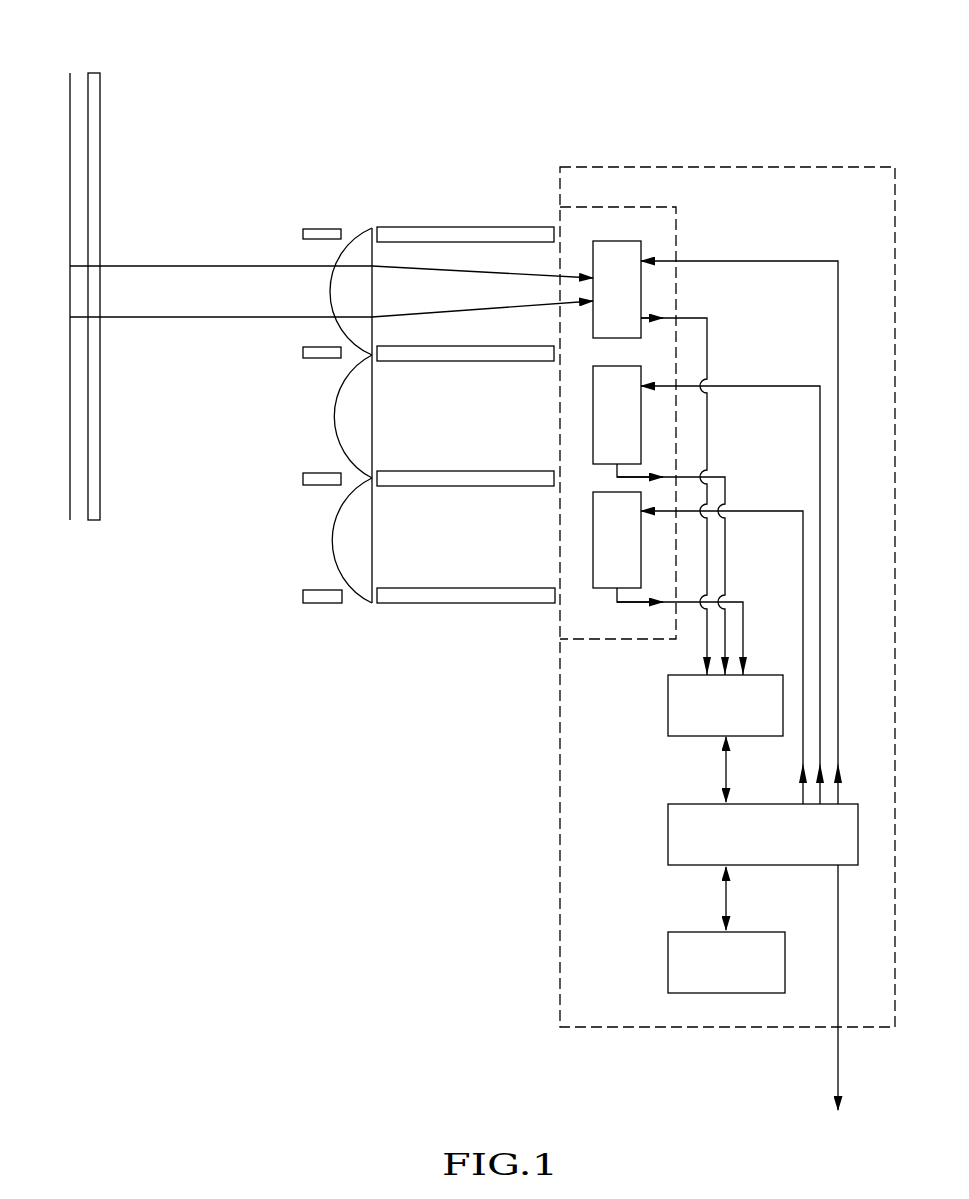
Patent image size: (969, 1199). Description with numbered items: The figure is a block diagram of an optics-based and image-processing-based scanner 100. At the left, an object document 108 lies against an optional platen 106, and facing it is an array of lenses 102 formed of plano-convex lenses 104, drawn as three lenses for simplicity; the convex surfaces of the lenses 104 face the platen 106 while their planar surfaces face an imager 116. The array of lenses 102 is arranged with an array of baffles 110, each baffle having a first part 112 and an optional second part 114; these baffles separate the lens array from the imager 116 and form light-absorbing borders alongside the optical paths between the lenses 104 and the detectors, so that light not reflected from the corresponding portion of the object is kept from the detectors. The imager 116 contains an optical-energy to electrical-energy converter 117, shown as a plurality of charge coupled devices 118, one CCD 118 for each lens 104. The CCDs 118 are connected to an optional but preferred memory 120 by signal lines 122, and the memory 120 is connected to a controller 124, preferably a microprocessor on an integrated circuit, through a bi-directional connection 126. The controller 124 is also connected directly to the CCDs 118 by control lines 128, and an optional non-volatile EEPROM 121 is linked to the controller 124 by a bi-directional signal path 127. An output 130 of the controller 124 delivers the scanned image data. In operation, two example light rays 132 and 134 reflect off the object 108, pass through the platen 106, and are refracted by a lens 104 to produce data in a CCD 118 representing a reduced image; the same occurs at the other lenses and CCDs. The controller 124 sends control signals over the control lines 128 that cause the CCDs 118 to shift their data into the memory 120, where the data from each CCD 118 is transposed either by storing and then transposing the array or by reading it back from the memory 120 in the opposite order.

The scanner 100 is at (385, 668).
The array of lenses 102 is at (363, 210).
The plano-convex lens 104 is at (336, 297).
The platen 106 is at (100, 132).
The object document 108 is at (69, 108).
The array of baffles 110 is at (466, 351).
The first baffle part 112 is at (509, 227).
The second baffle part 114 is at (305, 229).
The imager 116 is at (755, 167).
The optical-energy to electrical-energy converter 117 is at (610, 206).
The charge coupled device 118 is at (638, 241).
The memory 120 is at (668, 705).
The EEPROM 121 is at (668, 972).
The signal line 122 is at (707, 405).
The controller 124 is at (668, 835).
The bi-directional connection 126 is at (724, 772).
The bi-directional signal path 127 is at (727, 896).
The control line 128 is at (762, 386).
The output 130 is at (838, 1062).
The light ray 132 is at (163, 266).
The light ray 134 is at (158, 318).